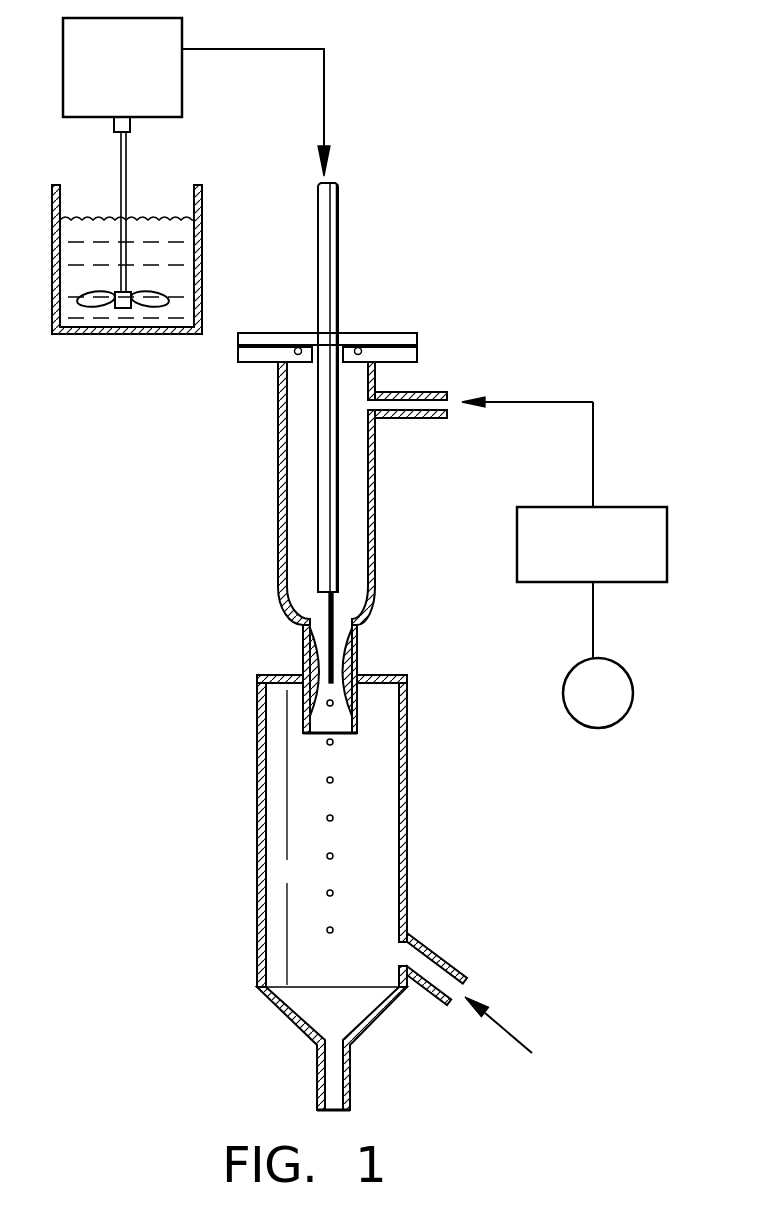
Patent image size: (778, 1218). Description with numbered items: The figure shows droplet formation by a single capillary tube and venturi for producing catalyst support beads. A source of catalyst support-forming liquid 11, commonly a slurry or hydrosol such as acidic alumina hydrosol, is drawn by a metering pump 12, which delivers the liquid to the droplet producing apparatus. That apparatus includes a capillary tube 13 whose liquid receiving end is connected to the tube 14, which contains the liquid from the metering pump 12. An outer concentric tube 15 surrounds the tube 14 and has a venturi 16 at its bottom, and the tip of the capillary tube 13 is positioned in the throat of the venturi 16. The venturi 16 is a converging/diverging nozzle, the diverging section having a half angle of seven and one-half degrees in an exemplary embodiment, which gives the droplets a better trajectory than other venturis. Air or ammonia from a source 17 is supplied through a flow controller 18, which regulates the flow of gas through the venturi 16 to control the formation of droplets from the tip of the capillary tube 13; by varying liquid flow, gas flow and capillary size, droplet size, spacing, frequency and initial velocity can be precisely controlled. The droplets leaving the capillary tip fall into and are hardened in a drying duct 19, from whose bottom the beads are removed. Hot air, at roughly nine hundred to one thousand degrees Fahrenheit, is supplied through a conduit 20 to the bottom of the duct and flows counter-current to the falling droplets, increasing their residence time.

The source of catalyst support-forming liquid 11 is at (202, 266).
The metering pump 12 is at (183, 33).
The capillary tube 13 is at (353, 630).
The tube 14 is at (339, 491).
The outer concentric tube 15 is at (375, 557).
The venturi 16 is at (345, 657).
The source of air or ammonia 17 is at (563, 682).
The flow controller 18 is at (517, 559).
The drying duct 19 is at (407, 795).
The conduit 20 is at (440, 953).